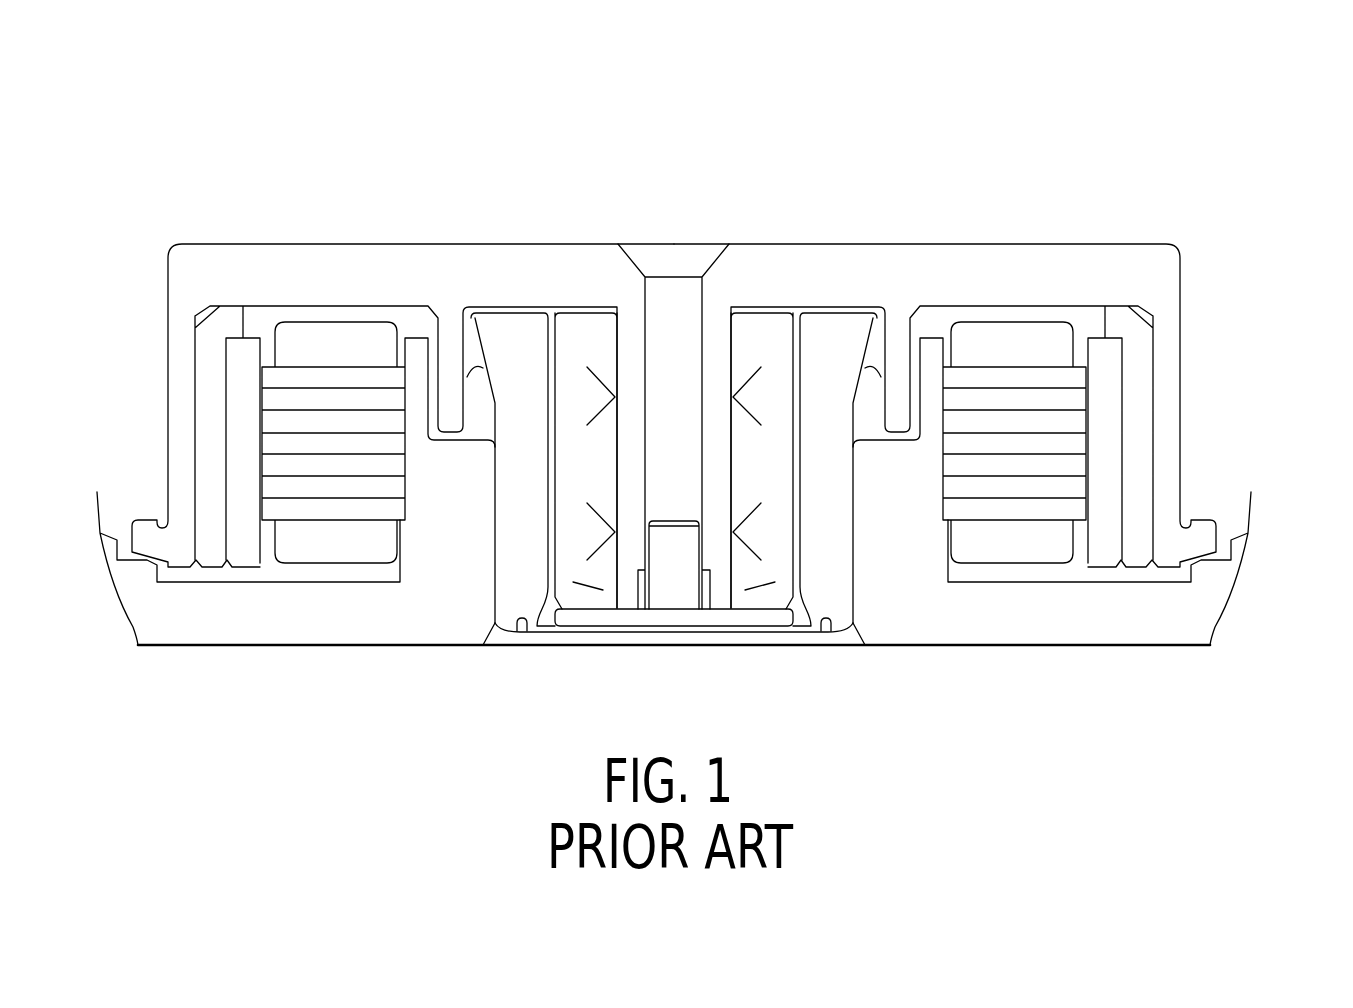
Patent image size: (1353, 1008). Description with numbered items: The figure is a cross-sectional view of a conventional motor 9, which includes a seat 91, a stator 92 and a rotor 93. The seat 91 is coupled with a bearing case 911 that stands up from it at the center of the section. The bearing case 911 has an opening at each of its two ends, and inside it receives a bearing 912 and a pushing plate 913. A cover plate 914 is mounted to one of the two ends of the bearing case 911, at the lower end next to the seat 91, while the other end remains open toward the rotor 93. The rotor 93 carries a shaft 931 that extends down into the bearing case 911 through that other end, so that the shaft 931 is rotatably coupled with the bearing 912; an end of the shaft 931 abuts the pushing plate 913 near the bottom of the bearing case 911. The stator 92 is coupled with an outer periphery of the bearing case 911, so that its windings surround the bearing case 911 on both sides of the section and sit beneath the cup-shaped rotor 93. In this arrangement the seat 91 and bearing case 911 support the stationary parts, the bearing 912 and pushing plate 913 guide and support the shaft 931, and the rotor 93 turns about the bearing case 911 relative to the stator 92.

The motor 9 is at (1100, 133).
The seat 91 is at (267, 630).
The bearing case 911 is at (507, 513).
The bearing 912 is at (778, 518).
The pushing plate 913 is at (672, 618).
The cover plate 914 is at (798, 632).
The stator 92 is at (1003, 337).
The rotor 93 is at (1180, 320).
The shaft 931 is at (670, 298).